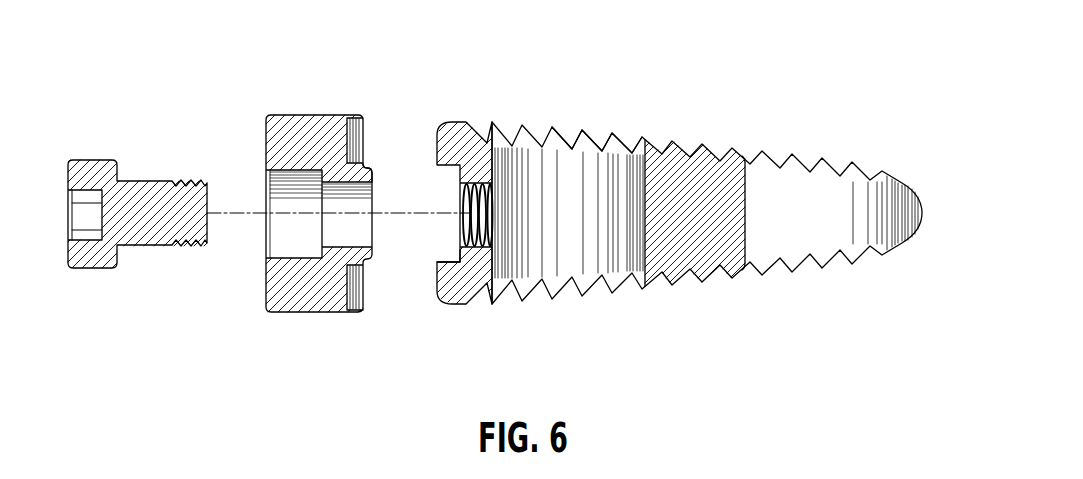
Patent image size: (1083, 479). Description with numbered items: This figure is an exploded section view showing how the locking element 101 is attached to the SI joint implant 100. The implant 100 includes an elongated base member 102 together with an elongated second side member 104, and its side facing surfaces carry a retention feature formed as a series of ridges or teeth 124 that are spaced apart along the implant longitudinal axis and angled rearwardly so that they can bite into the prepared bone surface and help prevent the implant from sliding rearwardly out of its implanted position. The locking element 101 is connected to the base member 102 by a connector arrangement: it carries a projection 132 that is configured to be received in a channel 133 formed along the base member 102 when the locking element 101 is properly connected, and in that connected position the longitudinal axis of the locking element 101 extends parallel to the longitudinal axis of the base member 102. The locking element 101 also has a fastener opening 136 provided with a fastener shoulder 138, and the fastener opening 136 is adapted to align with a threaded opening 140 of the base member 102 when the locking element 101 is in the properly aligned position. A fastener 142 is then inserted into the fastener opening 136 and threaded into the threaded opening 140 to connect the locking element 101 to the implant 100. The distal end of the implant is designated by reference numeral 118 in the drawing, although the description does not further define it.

The SI joint implant 100 is at (680, 204).
The locking element 101 is at (312, 190).
The base member 102 is at (435, 204).
The second side member 104 is at (685, 178).
The distal tip 118 is at (933, 212).
The ridges or teeth 124 is at (612, 135).
The projection 132 is at (363, 170).
The channel 133 is at (442, 260).
The fastener opening 136 is at (288, 171).
The fastener shoulder 138 is at (318, 253).
The threaded opening 140 is at (480, 250).
The fastener 142 is at (157, 181).